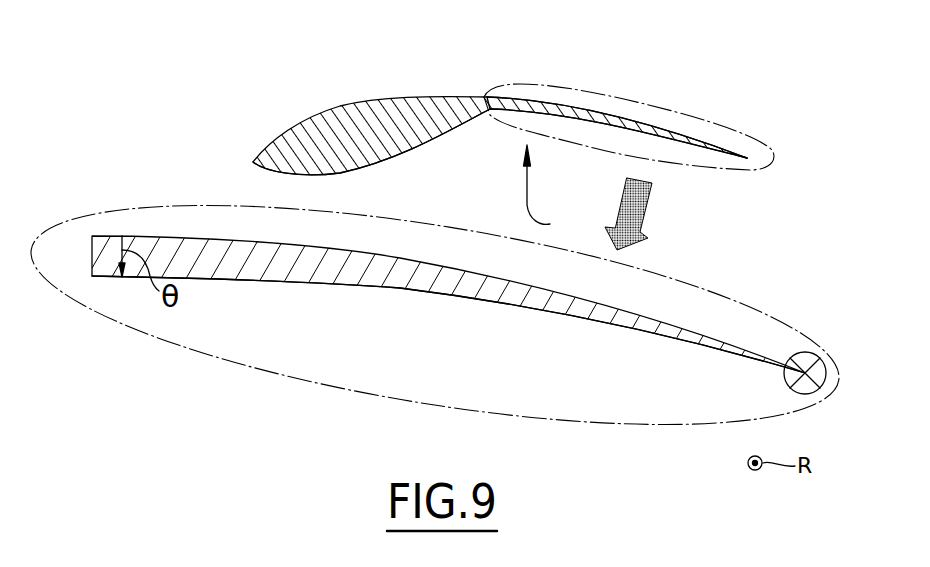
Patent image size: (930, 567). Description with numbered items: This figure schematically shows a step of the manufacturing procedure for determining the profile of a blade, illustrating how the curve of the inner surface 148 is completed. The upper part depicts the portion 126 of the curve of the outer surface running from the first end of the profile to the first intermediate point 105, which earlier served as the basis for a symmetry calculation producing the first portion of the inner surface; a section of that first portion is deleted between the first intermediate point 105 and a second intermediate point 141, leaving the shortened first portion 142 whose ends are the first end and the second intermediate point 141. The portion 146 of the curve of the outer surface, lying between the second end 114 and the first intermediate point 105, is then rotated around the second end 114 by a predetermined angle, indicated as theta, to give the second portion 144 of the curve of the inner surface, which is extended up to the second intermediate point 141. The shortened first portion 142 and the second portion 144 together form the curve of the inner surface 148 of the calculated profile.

The first intermediate point 105 is at (500, 86).
The second end 114 is at (752, 160).
The portion of the curve of the outer surface 126 is at (367, 100).
The second intermediate point 141 is at (491, 111).
The shortened first portion of the curve of the inner surface 142 is at (367, 166).
The second portion of the curve of the inner surface 144 is at (588, 117).
The portion of the curve of the outer surface 146 is at (638, 118).
The curve of the inner surface 148 is at (554, 191).